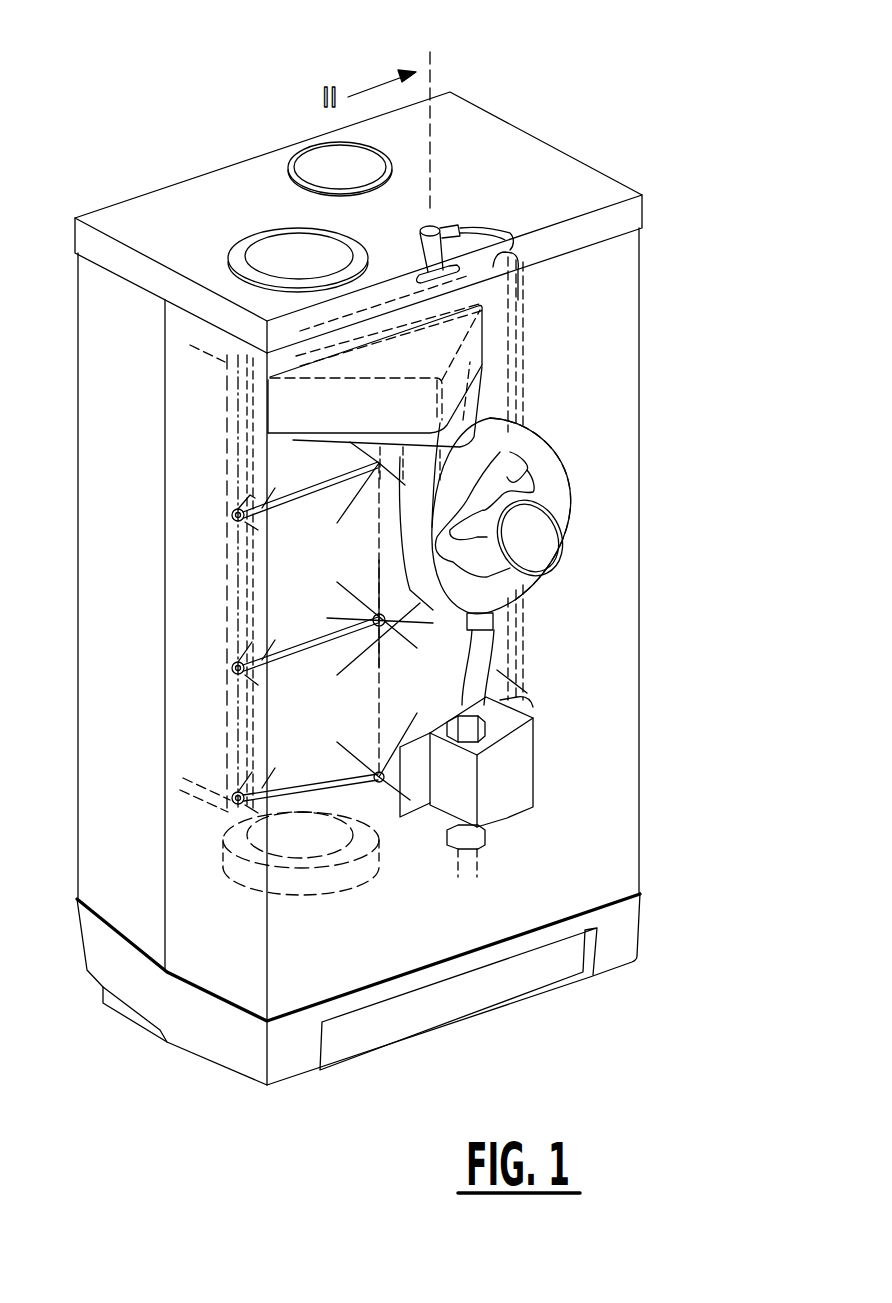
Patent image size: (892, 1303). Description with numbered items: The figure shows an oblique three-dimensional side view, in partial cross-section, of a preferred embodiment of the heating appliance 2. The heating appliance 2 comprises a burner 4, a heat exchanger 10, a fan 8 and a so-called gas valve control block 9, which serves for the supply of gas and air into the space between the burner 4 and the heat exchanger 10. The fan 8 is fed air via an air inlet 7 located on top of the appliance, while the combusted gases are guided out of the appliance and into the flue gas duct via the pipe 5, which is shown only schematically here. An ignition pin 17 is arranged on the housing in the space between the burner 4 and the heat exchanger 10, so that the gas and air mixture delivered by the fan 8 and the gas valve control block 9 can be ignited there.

The heating appliance 2 is at (685, 162).
The burner 4 is at (320, 408).
The pipe 5 is at (272, 246).
The air inlet 7 is at (327, 163).
The fan 8 is at (540, 453).
The gas valve control block 9 is at (503, 772).
The heat exchanger 10 is at (210, 620).
The ignition pin 17 is at (447, 216).